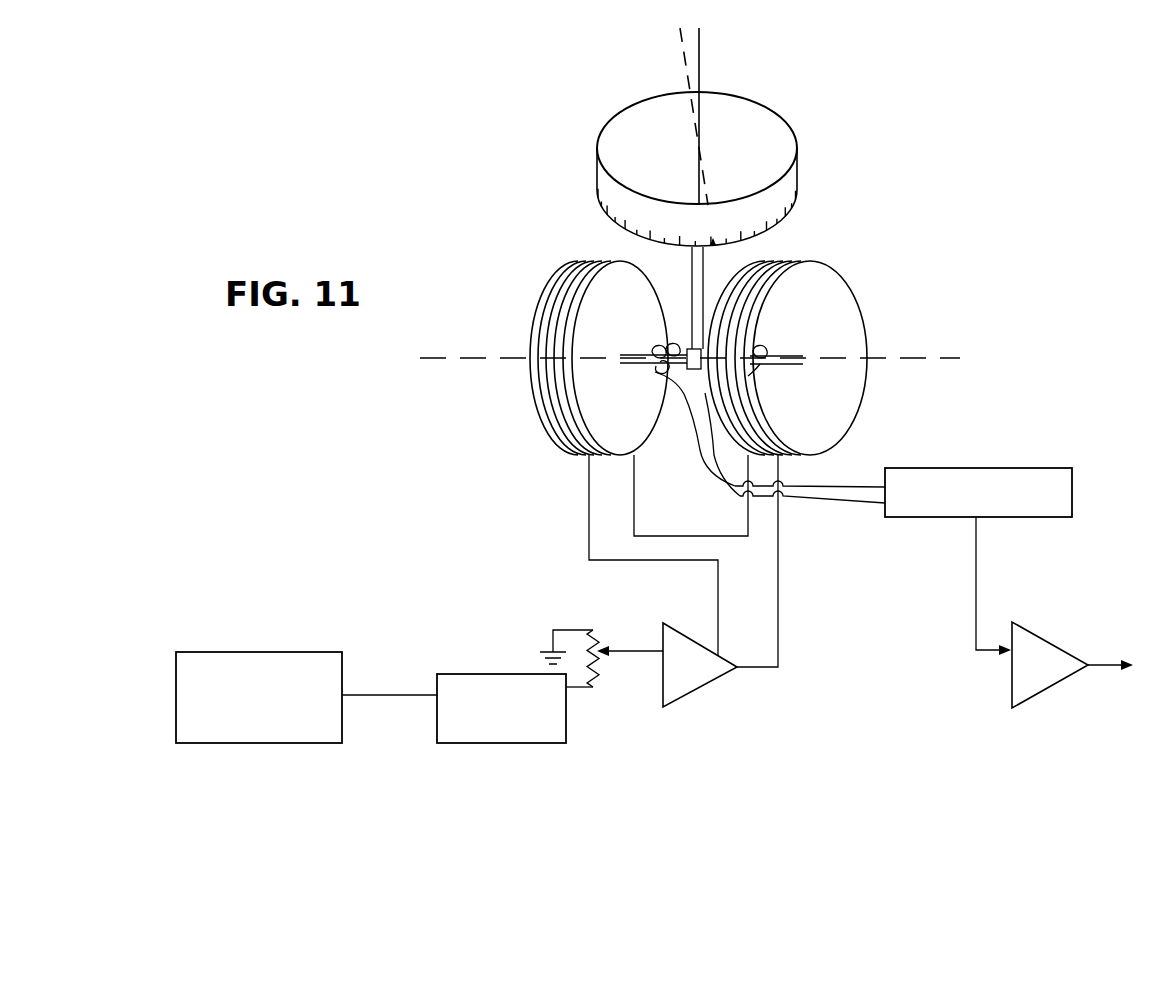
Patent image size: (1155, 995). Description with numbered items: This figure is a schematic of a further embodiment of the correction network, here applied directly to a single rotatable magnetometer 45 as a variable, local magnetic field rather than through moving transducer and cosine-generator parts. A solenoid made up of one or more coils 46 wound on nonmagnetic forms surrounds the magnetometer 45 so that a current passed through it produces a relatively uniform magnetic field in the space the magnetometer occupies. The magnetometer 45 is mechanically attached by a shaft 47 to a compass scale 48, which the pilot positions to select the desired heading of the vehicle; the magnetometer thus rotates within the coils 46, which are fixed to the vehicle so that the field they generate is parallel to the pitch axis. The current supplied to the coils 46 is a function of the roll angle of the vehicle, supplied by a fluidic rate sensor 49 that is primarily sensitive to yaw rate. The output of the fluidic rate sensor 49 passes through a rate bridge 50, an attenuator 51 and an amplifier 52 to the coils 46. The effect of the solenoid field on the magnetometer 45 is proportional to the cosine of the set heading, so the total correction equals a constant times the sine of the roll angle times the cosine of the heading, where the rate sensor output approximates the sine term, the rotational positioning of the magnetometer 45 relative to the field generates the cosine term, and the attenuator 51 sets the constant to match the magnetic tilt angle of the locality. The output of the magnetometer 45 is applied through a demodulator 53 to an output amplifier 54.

The rotatable magnetometer 45 is at (768, 347).
The coils 46 is at (546, 338).
The shaft 47 is at (690, 258).
The compass scale 48 is at (793, 124).
The fluidic rate sensor 49 is at (257, 652).
The rate bridge 50 is at (482, 674).
The attenuator 51 is at (604, 632).
The amplifier 52 is at (678, 698).
The demodulator 53 is at (972, 468).
The output amplifier 54 is at (1070, 655).